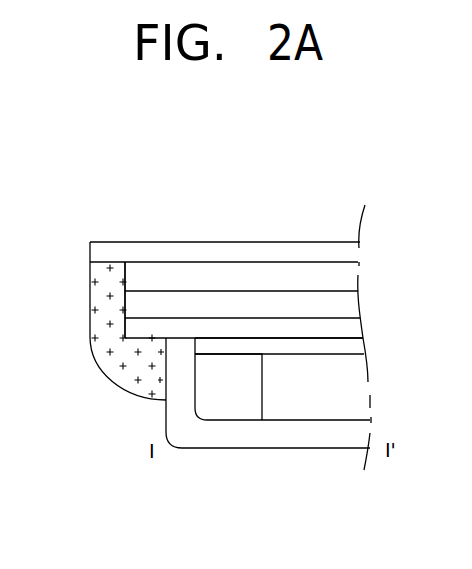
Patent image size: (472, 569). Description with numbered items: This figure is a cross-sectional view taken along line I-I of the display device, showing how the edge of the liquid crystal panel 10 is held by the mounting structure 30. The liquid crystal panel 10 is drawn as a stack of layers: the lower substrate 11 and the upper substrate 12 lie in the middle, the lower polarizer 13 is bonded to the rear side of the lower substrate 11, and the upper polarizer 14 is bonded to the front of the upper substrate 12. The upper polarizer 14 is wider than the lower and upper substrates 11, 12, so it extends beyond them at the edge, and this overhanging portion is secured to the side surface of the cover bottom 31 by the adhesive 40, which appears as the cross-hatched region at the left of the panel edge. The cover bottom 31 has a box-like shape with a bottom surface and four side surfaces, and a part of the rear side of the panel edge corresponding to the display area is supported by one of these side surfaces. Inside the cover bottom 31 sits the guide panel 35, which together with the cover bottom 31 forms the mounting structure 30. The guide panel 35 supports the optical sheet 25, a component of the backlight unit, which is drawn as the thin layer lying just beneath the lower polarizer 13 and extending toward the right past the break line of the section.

The liquid crystal panel 10 is at (290, 182).
The upper polarizer 14 is at (138, 258).
The upper substrate 12 is at (178, 278).
The lower substrate 11 is at (224, 305).
The lower polarizer 13 is at (272, 328).
The adhesive 40 is at (90, 300).
The optical sheet 25 is at (352, 345).
The mounting structure 30 is at (308, 496).
The cover bottom 31 is at (290, 435).
The guide panel 35 is at (228, 408).